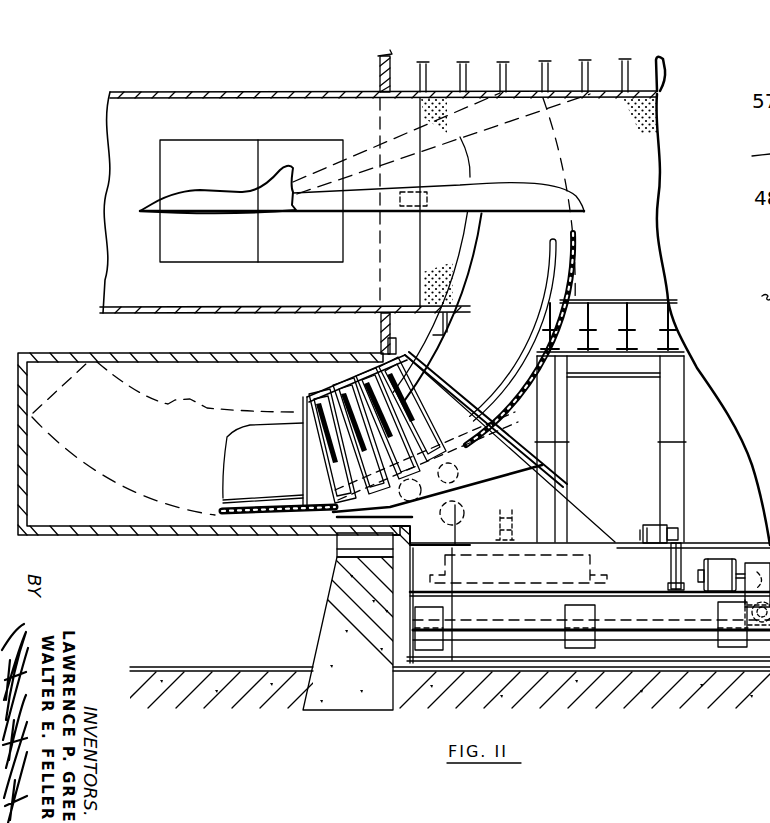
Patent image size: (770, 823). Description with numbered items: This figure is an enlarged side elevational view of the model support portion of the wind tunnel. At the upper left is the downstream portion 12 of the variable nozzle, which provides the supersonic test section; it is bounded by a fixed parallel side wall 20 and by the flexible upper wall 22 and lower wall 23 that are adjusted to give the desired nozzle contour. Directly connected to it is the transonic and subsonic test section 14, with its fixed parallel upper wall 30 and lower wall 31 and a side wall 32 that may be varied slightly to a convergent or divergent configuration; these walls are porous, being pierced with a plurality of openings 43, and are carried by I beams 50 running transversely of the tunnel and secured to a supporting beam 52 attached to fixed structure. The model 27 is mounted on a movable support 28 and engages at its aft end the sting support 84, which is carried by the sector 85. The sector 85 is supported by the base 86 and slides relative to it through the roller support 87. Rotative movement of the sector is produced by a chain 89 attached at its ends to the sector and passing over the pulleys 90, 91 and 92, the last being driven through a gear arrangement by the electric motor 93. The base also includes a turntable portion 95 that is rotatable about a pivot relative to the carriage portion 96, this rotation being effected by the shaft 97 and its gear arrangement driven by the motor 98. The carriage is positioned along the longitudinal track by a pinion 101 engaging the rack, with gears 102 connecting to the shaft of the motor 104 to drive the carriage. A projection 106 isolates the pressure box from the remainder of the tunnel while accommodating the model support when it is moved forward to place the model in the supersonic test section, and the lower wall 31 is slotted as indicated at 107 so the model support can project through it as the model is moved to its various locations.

The downstream portion of the variable nozzle 12 is at (234, 88).
The transonic and subsonic test section 14 is at (642, 70).
The side wall 20 is at (115, 142).
The upper wall 22 is at (332, 98).
The lower wall 23 is at (170, 307).
The model 27 is at (190, 203).
The movable support 28 is at (505, 167).
The upper wall 30 is at (572, 98).
The lower wall 31 is at (608, 301).
The side wall 32 is at (640, 170).
The openings 43 is at (650, 112).
The I beams 50 is at (582, 330).
The supporting beam 52 is at (640, 365).
The sting support 84 is at (460, 182).
The sector 85 is at (578, 218).
The base 86 is at (568, 508).
The roller support 87 is at (420, 378).
The chain 89 is at (580, 252).
The pulley 90 is at (403, 482).
The pulley 91 is at (452, 470).
The pulley 92 is at (464, 509).
The electric motor 93 is at (515, 514).
The turntable portion of the base 95 is at (615, 548).
The carriage portion 96 is at (668, 596).
The shaft 97 is at (680, 560).
The motor 98 is at (652, 526).
The pinion 101 is at (737, 623).
The gears 102 is at (762, 572).
The motor 104 is at (718, 562).
The projection 106 is at (176, 537).
The slot 107 is at (655, 300).